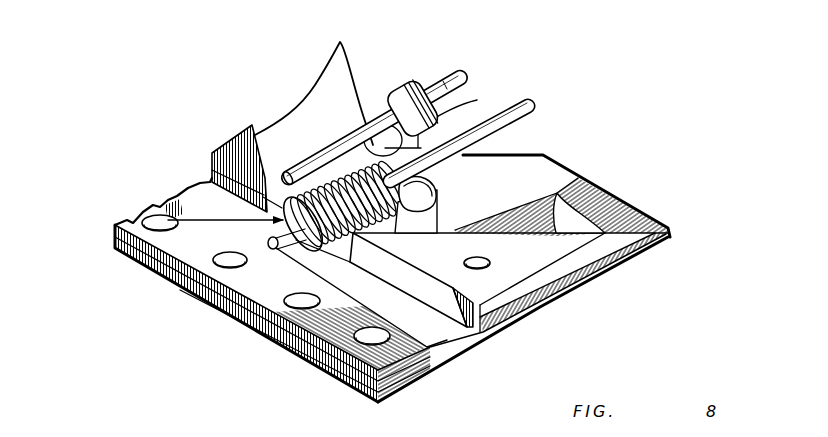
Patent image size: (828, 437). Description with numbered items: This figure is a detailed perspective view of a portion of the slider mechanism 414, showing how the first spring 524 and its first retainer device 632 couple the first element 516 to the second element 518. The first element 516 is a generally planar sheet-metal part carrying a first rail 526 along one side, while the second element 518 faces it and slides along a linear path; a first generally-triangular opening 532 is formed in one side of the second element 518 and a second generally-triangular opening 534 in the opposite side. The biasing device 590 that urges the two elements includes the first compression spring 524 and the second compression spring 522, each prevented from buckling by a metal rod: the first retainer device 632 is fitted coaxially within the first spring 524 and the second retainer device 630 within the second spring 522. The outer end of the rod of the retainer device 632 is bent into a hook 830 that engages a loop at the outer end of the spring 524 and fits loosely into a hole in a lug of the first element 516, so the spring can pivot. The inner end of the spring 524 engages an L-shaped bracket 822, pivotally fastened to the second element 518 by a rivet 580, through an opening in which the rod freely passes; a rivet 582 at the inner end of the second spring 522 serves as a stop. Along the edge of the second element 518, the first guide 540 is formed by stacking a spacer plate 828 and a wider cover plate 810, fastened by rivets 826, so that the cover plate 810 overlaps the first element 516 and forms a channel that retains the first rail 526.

The slider mechanism 414 is at (218, 92).
The second element 518 is at (317, 370).
The biasing device 590 is at (113, 247).
The cover plate 810 is at (233, 303).
The spacer plate 828 is at (267, 322).
The rivets 826 is at (373, 338).
The first guide 540 is at (163, 202).
The first generally-triangular opening 532 is at (211, 163).
The second generally-triangular opening 534 is at (513, 140).
The rivet 582 is at (458, 154).
The first element 516 is at (507, 273).
The first compression spring 524 is at (345, 238).
The first rail 526 is at (447, 330).
The hook 830 is at (268, 243).
The bracket 822 is at (405, 228).
The rivet 580 is at (413, 188).
The first retainer device 632 is at (533, 104).
The second retainer device 630 is at (338, 143).
The second compression spring 522 is at (418, 82).